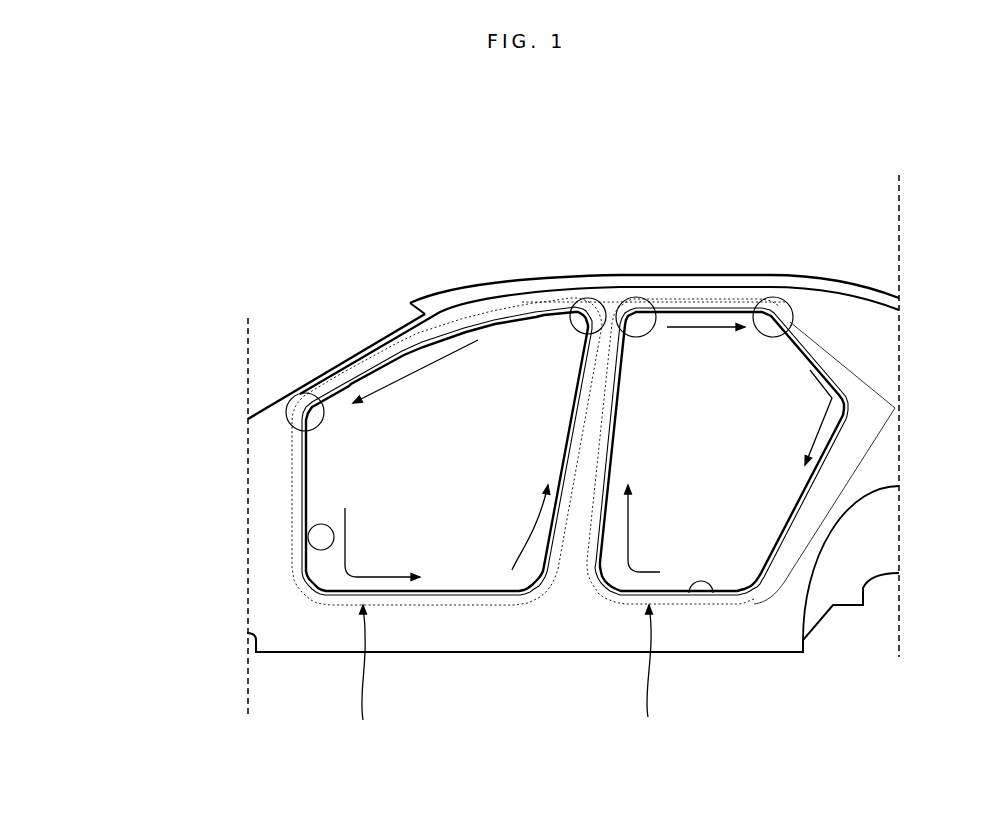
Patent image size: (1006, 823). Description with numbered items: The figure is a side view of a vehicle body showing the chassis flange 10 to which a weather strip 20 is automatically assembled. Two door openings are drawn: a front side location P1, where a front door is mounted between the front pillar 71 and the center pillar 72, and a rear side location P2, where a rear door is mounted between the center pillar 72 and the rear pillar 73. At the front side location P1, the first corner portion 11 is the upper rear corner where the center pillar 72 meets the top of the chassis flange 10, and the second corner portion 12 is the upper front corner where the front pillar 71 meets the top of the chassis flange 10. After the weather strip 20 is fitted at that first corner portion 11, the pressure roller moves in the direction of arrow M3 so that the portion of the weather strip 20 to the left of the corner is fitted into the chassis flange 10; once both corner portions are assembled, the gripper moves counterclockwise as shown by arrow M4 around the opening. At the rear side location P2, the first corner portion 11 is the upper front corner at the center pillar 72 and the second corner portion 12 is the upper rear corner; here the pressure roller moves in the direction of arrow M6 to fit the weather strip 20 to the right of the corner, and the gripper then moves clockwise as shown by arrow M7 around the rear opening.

The chassis flange 10 is at (300, 494).
The first corner portion 11 is at (597, 298).
The second corner portion 12 is at (290, 404).
The weather strip 20 is at (328, 551).
The front pillar 71 is at (278, 447).
The center pillar 72 is at (585, 438).
The rear pillar 73 is at (870, 339).
The front side location P1 is at (362, 679).
The rear side location P2 is at (639, 674).
The arrow M3 is at (415, 371).
The arrow M4 is at (447, 533).
The arrow M6 is at (706, 342).
The arrow M7 is at (729, 471).